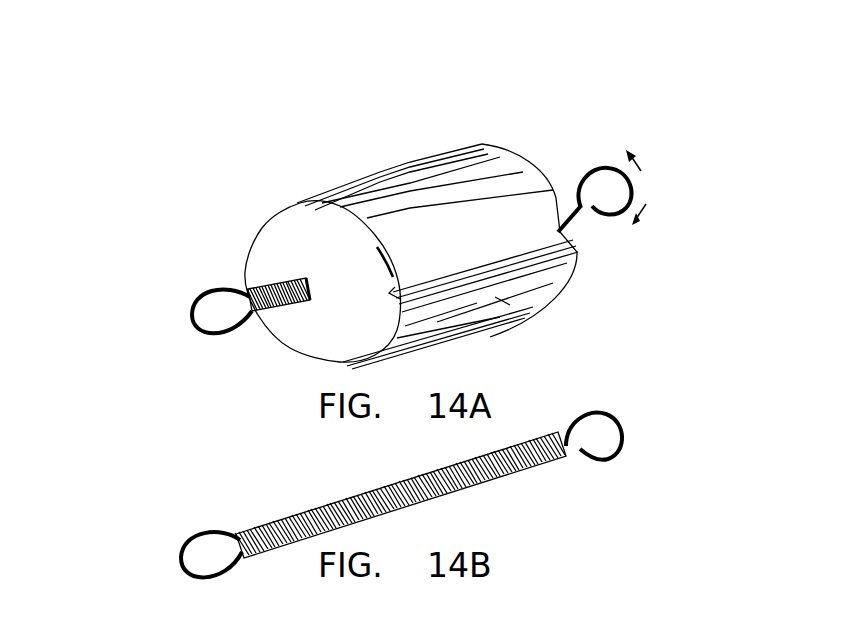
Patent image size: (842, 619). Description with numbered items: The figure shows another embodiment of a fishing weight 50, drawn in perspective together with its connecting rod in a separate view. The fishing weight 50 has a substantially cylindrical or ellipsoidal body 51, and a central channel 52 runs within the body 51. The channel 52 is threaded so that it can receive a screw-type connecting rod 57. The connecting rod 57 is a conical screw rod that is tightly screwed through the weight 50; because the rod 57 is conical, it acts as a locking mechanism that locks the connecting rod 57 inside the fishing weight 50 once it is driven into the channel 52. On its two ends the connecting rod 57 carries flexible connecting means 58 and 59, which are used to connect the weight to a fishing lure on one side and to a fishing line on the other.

In FIG. 14A, the fishing weight 50 is at (244, 184).
In FIG. 14A, the body 51 is at (362, 195).
In FIG. 14A, the central channel 52 is at (303, 300).
In FIG. 14A, the connecting rod 57 is at (276, 289).
In FIG. 14B, the connecting rod 57 is at (533, 470).
In FIG. 14A, the flexible connecting means 58 is at (188, 294).
In FIG. 14B, the flexible connecting means 58 is at (192, 532).
In FIG. 14A, the flexible connecting means 59 is at (633, 187).
In FIG. 14B, the flexible connecting means 59 is at (623, 430).